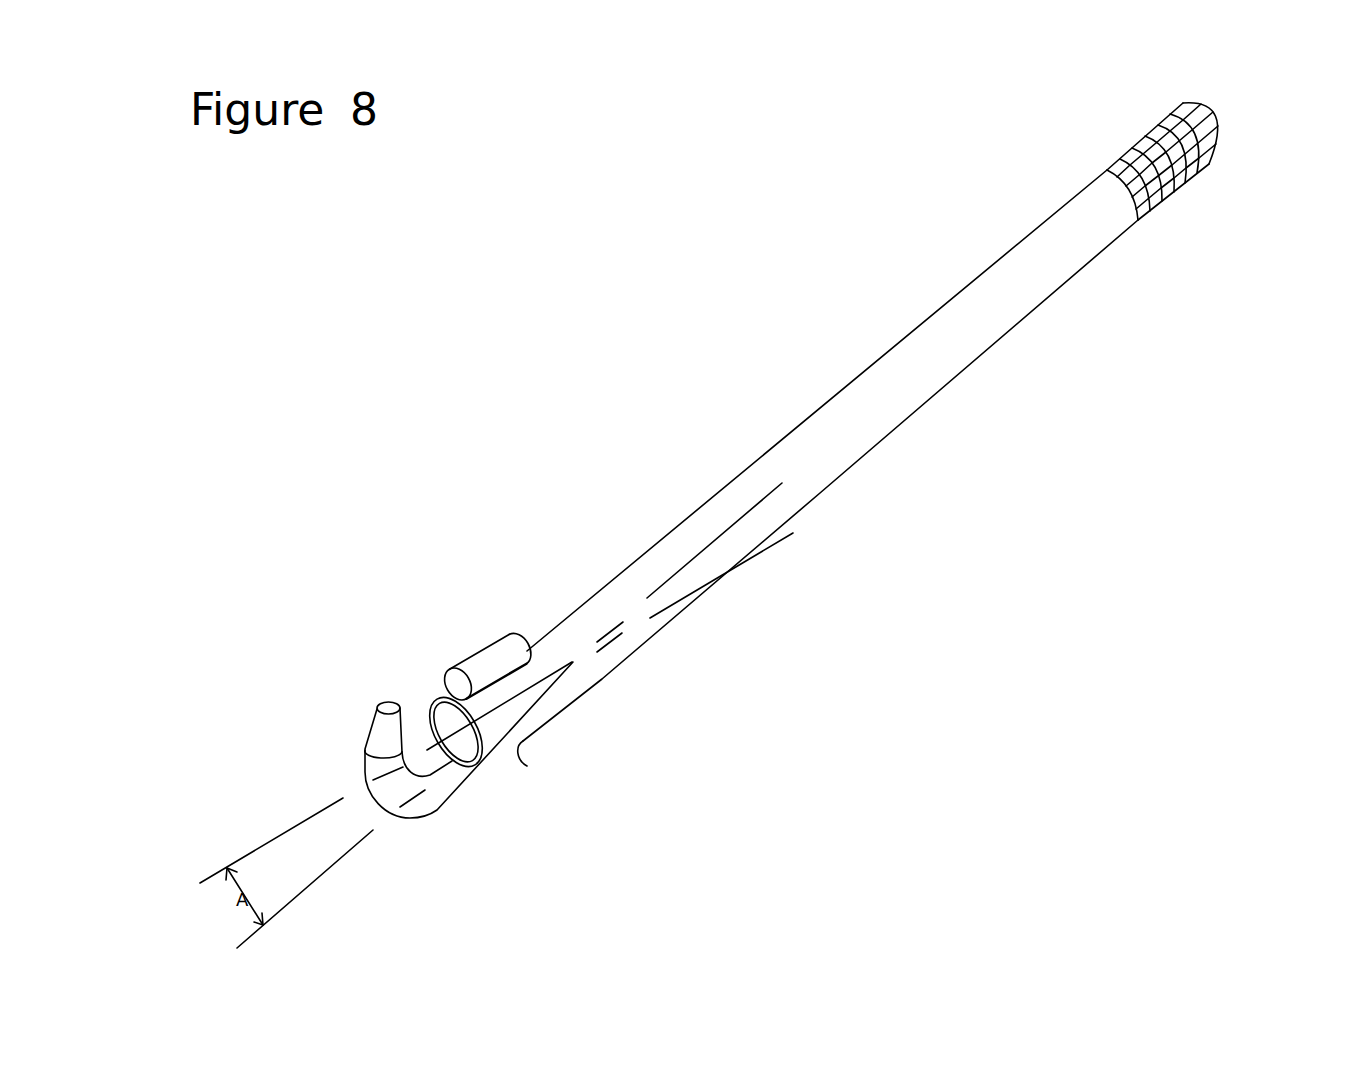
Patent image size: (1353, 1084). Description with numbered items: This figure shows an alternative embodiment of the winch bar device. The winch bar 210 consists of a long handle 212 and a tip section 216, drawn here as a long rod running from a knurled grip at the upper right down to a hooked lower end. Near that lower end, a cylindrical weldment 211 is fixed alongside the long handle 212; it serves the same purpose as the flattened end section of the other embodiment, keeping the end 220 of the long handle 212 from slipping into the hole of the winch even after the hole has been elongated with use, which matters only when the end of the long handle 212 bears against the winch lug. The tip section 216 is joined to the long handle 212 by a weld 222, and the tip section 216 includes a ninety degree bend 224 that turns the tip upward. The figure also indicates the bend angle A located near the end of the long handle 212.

The winch bar 210 is at (1155, 342).
The cylindrical weldment 211 is at (513, 648).
The long handle 212 is at (834, 423).
The tip section 216 is at (435, 812).
The end 220 is at (530, 764).
The weld 222 is at (460, 763).
The ninety degree bend 224 is at (412, 817).